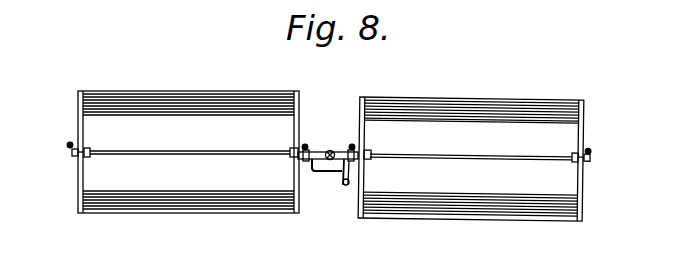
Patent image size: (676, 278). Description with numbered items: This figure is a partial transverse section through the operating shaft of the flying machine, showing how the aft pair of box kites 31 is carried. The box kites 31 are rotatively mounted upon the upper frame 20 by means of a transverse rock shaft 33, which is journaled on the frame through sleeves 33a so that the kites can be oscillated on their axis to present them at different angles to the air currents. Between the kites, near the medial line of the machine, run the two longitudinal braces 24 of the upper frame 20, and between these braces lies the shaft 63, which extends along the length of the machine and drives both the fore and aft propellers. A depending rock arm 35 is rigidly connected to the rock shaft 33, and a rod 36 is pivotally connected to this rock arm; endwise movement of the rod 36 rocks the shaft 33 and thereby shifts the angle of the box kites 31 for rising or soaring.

The box kites 31 is at (154, 86).
The rock shaft 33 is at (331, 146).
The sleeves 33a is at (604, 166).
The upper frame 20 is at (67, 144).
The longitudinal braces 24 is at (303, 146).
The shaft 63 is at (331, 151).
The rock arm 35 is at (337, 173).
The rod 36 is at (348, 186).